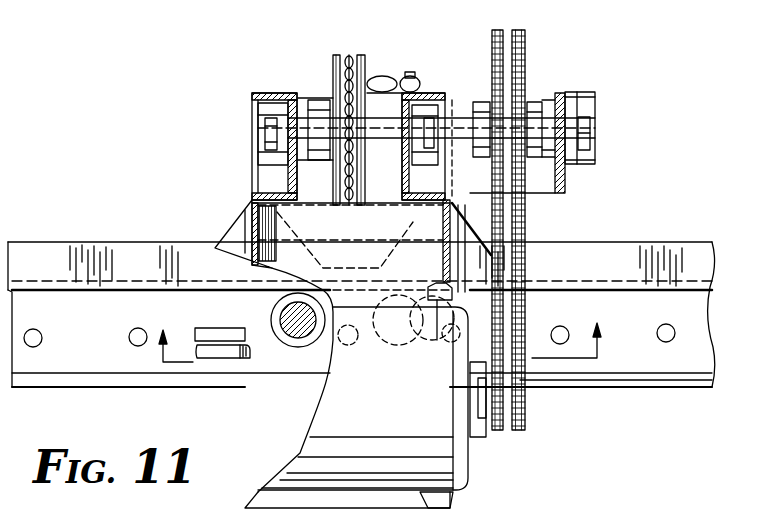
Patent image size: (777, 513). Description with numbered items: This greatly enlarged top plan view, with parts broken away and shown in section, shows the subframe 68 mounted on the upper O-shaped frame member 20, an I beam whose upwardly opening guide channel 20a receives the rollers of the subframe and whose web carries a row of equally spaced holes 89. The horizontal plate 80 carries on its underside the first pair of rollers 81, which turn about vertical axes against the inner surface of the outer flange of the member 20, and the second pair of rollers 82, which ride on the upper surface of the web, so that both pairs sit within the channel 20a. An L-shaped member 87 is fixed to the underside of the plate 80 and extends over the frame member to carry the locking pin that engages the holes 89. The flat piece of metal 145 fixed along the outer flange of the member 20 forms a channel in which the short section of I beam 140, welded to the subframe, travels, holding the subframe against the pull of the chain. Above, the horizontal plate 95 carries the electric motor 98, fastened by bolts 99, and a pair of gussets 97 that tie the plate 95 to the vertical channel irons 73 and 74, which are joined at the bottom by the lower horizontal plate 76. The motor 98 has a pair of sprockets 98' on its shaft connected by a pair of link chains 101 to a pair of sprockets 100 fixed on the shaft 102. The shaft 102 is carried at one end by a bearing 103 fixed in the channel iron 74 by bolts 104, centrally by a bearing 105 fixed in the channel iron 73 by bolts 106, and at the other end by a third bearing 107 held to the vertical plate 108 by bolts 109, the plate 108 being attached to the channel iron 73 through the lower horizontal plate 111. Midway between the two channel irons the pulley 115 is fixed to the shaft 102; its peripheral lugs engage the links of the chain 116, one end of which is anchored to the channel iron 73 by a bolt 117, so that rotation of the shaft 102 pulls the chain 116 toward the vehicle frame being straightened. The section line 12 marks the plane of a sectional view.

The upper O-shaped frame member 20 is at (677, 377).
The upwardly opening guide channel 20a is at (697, 363).
The section line 12 is at (381, 350).
The equally spaced holes 89 is at (43, 340).
The second pair of rollers 82 is at (222, 364).
The flat piece of metal 145 is at (103, 242).
The horizontal plate 80 is at (220, 242).
The subframe 68 is at (226, 217).
The short section of I beam 140 is at (345, 240).
The gussets 97 is at (247, 200).
The lower horizontal plate 111 is at (533, 229).
The lower horizontal plate 76 is at (301, 94).
The channel iron 74 is at (268, 93).
The bearing 103 is at (263, 108).
The bolts 104 is at (270, 130).
The shaft 102 is at (548, 118).
The pulley 115 is at (336, 56).
The chain 116 is at (353, 57).
The bolt 117 is at (410, 76).
The channel iron 73 is at (430, 92).
The bearing 105 is at (433, 107).
The bolts 106 is at (432, 150).
The link chains 101 is at (518, 222).
The vertical plate 108 is at (542, 176).
The third bearing 107 is at (590, 92).
The bolts 109 is at (585, 128).
The pair of sprockets 100 is at (521, 44).
The pair of sprockets 98' is at (524, 399).
The electric motor 98 is at (363, 380).
The horizontal plate 95 is at (256, 502).
The bolts 99 is at (456, 500).
The first pair of rollers 81 is at (296, 340).
The L-shaped member 87 is at (388, 362).